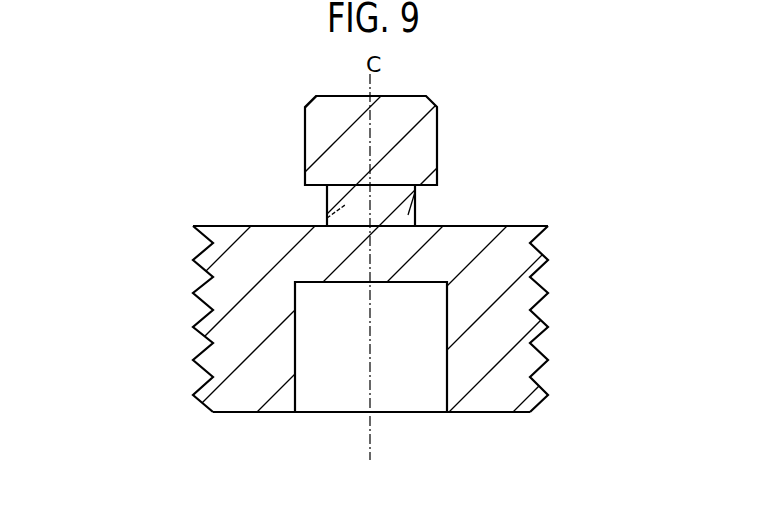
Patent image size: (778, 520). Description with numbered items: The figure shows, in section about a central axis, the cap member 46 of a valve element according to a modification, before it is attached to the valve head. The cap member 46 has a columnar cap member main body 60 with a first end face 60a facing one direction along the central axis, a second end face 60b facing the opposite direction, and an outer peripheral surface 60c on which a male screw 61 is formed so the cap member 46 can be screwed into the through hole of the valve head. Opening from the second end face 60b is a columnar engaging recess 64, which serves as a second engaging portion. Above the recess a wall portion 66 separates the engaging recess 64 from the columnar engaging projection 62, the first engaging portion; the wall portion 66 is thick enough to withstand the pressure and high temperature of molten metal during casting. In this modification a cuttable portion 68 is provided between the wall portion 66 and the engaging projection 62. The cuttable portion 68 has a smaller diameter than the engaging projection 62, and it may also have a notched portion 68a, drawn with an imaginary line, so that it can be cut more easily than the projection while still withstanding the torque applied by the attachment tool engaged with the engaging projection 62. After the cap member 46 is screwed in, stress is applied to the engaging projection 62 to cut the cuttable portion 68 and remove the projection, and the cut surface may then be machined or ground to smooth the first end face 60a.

The cap member 46 is at (106, 117).
The engaging projection 62 is at (317, 140).
The cuttable portion 68 is at (363, 204).
The notched portion 68a is at (418, 210).
The cap member main body 60 is at (183, 247).
The first end face 60a is at (512, 227).
The second end face 60b is at (510, 413).
The outer peripheral surface 60c is at (538, 320).
The male screw 61 is at (539, 319).
The engaging recess 64 is at (296, 392).
The wall portion 66 is at (393, 245).